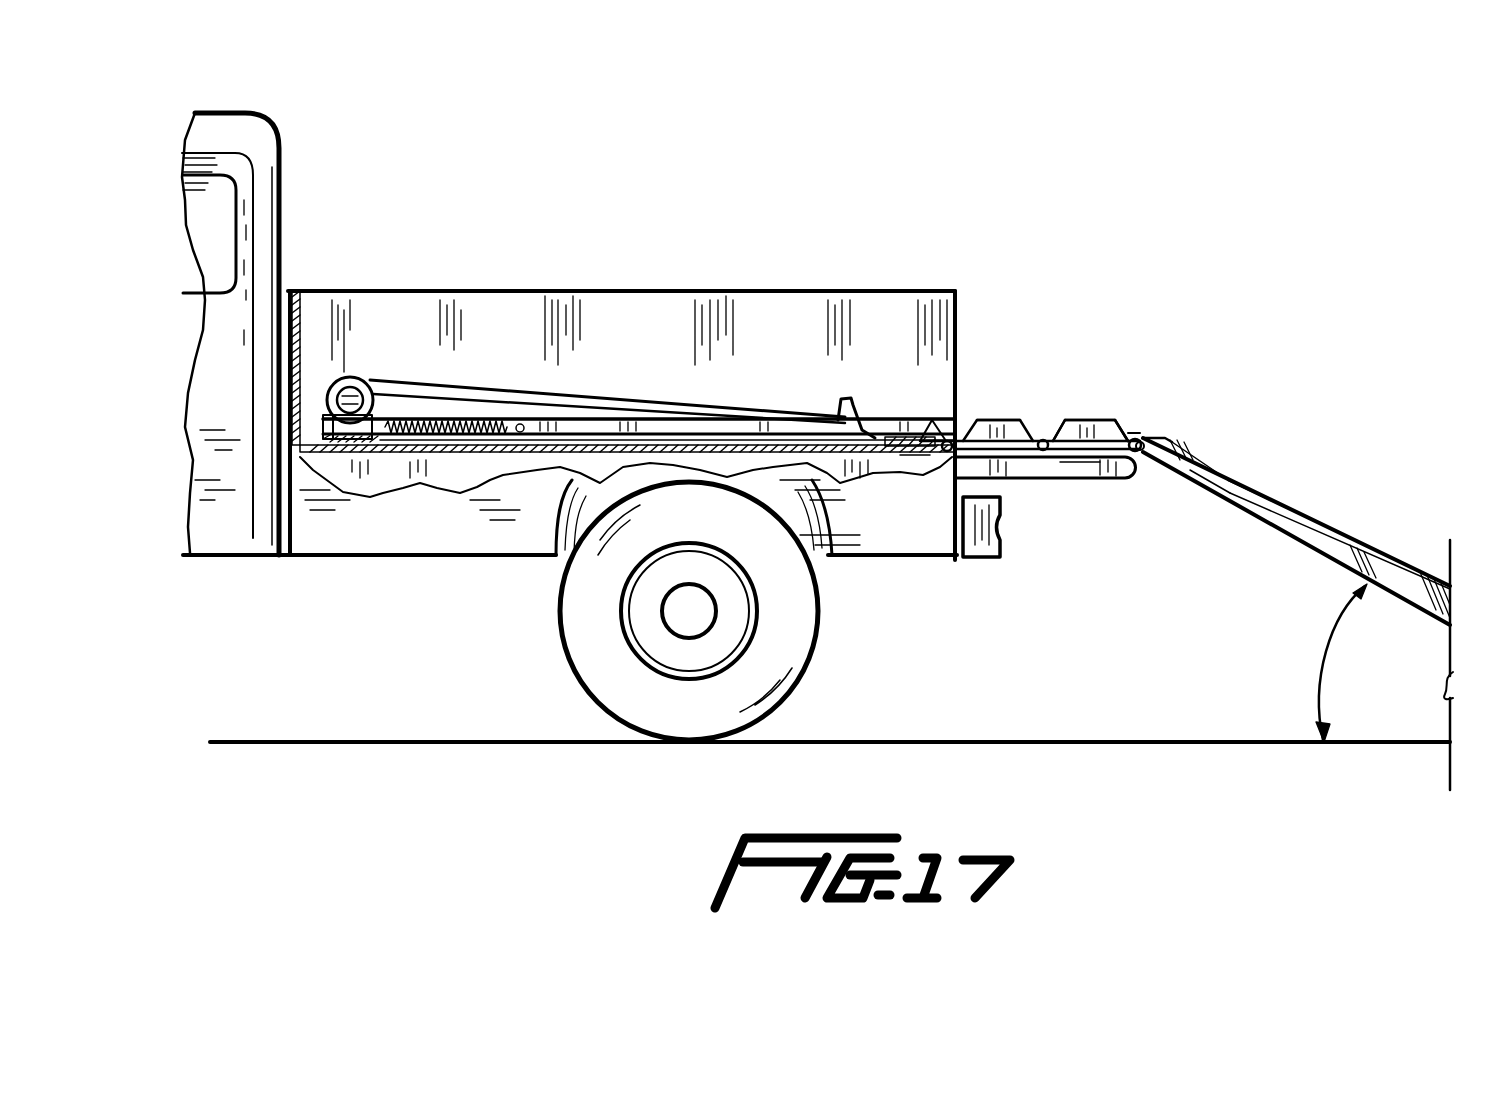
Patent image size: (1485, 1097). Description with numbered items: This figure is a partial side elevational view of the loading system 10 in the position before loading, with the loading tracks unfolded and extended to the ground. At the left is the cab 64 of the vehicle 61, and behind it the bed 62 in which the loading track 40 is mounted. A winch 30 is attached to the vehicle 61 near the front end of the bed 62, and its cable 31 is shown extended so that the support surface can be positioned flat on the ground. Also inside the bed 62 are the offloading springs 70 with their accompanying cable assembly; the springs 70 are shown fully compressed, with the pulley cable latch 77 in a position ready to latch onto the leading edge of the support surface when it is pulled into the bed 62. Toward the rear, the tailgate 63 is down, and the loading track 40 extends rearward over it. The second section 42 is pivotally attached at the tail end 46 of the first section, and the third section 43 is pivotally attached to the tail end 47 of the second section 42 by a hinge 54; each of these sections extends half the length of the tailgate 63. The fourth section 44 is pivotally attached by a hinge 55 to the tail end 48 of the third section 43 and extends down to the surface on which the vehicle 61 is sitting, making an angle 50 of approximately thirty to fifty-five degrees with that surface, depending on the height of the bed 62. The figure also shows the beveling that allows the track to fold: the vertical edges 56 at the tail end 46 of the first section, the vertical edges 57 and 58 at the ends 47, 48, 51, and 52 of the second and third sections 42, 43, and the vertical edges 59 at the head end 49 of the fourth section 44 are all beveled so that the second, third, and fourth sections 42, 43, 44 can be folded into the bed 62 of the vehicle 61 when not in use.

The loading system 10 is at (1252, 318).
The winch 30 is at (362, 372).
The cable 31 is at (547, 390).
The loading track 40 is at (1226, 492).
The fourth section 44 is at (1296, 531).
The second section 42 is at (1020, 415).
The third section 43 is at (1103, 428).
The tail end 46 is at (940, 423).
The tail end 47 is at (1060, 416).
The tail end 48 is at (1133, 433).
The head end 49 is at (1153, 436).
The angle 50 is at (1298, 663).
The end 51 is at (963, 420).
The end 52 is at (1083, 416).
The hinge 54 is at (1040, 458).
The hinge 55 is at (1140, 455).
The vertical edges 56 is at (912, 458).
The vertical edges 57 is at (1005, 415).
The vertical edges 58 is at (1080, 463).
The vertical edges 59 is at (1210, 463).
The vehicle 61 is at (224, 574).
The bed 62 is at (360, 533).
The tailgate 63 is at (1080, 468).
The cab 64 is at (258, 152).
The offloading spring 70 is at (447, 440).
The pulley cable hook or latch 77 is at (837, 397).